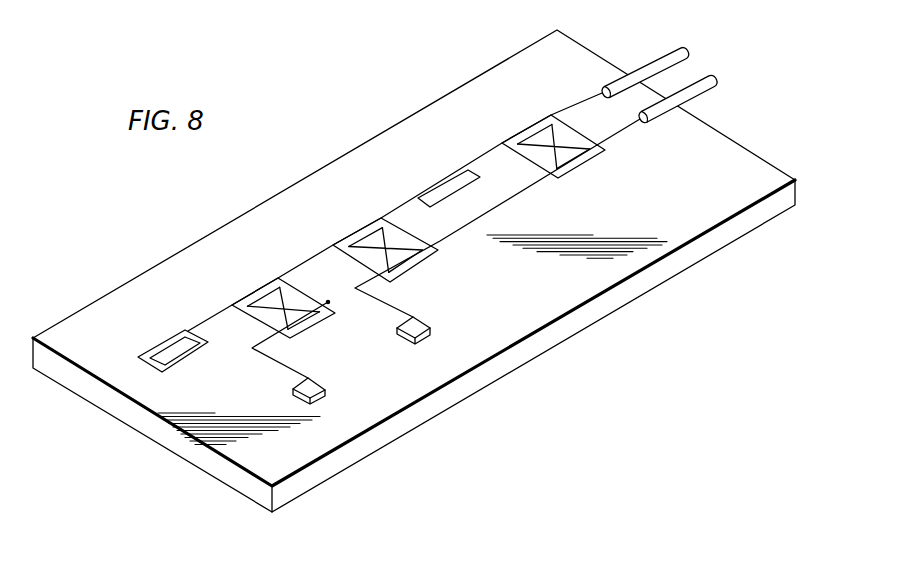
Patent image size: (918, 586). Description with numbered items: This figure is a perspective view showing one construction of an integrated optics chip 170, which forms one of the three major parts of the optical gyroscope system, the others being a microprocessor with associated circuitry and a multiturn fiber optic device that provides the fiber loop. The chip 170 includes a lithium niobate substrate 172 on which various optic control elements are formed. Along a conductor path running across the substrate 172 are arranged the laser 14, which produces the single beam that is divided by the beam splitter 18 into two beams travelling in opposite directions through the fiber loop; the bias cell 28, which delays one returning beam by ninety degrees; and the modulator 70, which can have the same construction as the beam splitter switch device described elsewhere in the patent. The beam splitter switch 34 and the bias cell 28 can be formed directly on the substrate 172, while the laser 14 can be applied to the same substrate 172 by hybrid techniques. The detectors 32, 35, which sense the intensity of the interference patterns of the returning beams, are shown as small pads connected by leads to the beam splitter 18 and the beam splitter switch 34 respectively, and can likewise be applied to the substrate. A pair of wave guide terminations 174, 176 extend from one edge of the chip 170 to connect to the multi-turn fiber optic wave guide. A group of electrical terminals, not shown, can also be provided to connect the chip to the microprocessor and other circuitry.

The laser 14 is at (152, 348).
The beam splitter 18 is at (347, 235).
The bias cell 28 is at (435, 190).
The detector 32 is at (422, 323).
The beam splitter switch 34 is at (237, 300).
The detector 35 is at (317, 384).
The modulator 70 is at (583, 167).
The integrated optics chip 170 is at (200, 466).
The lithium niobate substrate 172 is at (298, 492).
The wave guide termination 174 is at (612, 83).
The wave guide termination 176 is at (653, 110).